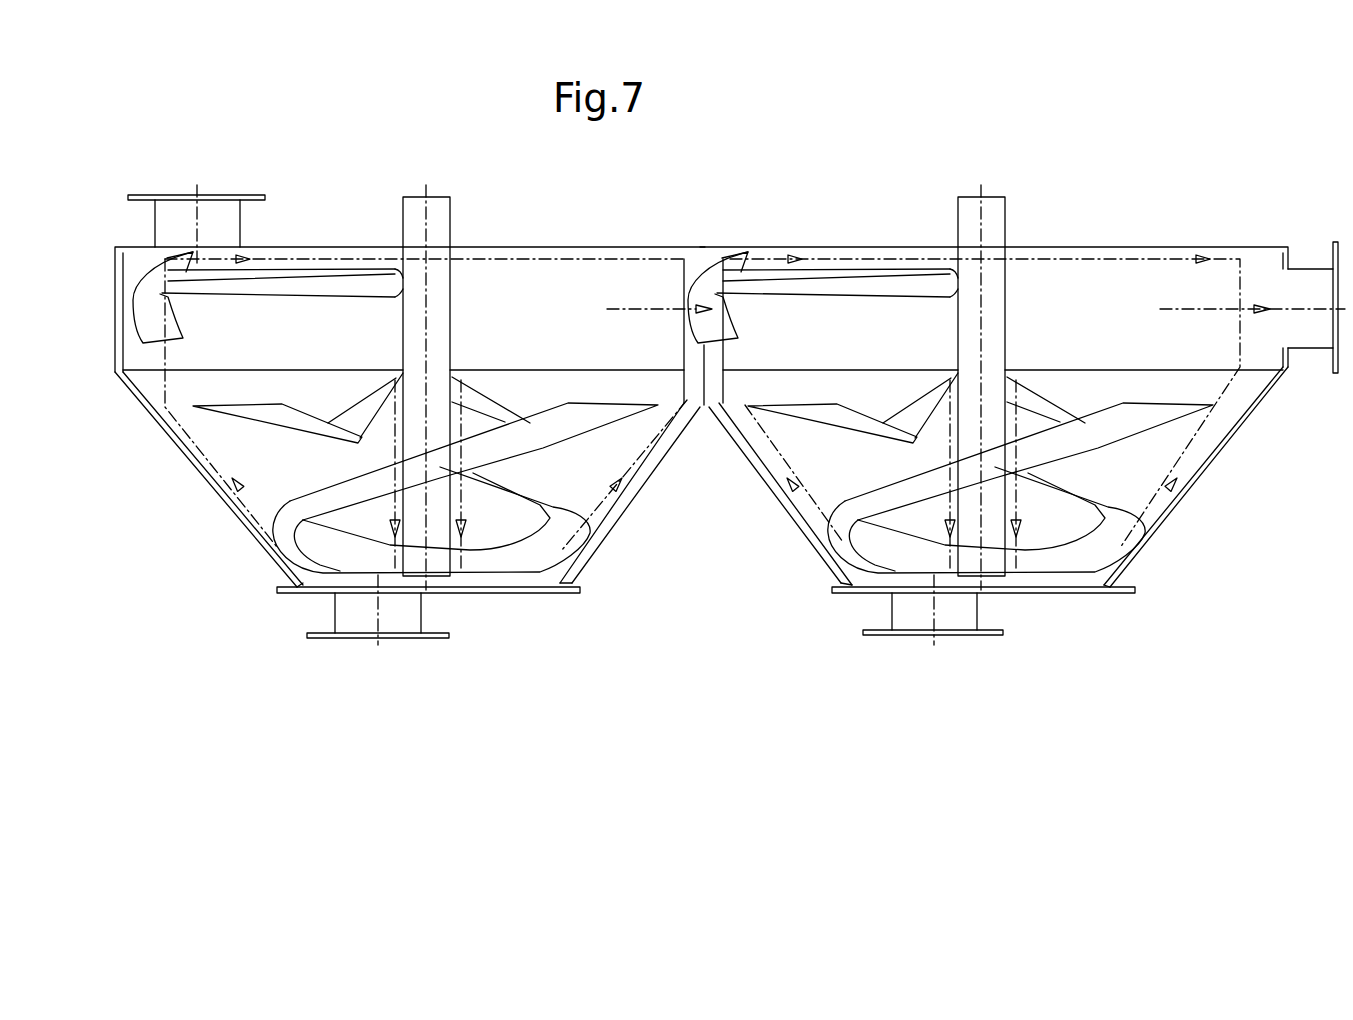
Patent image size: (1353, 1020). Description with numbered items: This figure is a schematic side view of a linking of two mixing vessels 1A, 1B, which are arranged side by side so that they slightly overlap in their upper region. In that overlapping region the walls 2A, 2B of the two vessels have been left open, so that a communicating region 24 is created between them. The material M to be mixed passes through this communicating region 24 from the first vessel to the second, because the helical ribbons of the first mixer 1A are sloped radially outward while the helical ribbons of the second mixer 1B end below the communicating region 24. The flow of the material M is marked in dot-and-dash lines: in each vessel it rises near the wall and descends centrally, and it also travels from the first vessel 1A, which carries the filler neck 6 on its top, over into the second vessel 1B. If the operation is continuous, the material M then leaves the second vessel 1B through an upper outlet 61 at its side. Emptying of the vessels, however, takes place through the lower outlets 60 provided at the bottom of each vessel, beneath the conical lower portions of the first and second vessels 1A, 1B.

The filler neck 6 is at (220, 196).
The first mixing vessel 1A is at (293, 245).
The wall of the first mixing vessel 2A is at (550, 263).
The material to be mixed M is at (635, 258).
The communicating region 24 is at (698, 262).
The wall of the second mixing vessel 2B is at (848, 257).
The second mixing vessel 1B is at (905, 245).
The upper outlet 61 is at (1317, 267).
The lower outlet 60 is at (368, 641).